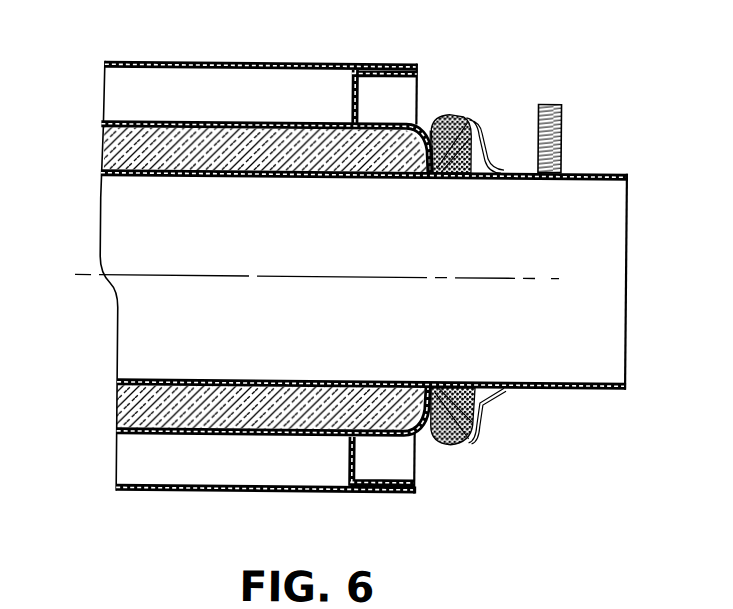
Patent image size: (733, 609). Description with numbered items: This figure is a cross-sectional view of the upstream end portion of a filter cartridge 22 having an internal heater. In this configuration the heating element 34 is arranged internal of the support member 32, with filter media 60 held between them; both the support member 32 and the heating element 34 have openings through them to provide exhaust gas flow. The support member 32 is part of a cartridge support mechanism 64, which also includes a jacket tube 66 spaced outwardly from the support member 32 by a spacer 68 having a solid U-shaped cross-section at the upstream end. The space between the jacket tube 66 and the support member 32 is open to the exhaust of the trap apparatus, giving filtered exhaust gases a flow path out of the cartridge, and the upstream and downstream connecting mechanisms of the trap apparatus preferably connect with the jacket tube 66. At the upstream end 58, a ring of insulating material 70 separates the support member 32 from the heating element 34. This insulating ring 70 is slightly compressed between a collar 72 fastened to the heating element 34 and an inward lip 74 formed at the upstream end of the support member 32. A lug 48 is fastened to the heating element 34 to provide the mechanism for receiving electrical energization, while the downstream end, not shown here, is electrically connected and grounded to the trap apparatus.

The filter cartridge 22 is at (552, 454).
The support member 32 is at (142, 124).
The heating element 34 is at (592, 183).
The lug 48 is at (563, 140).
The upstream end 58 is at (592, 318).
The filter media 60 is at (118, 155).
The cartridge support mechanism 64 is at (290, 255).
The jacket tube 66 is at (157, 64).
The spacer 68 is at (358, 100).
The ring of insulating material 70 is at (451, 442).
The collar 72 is at (479, 130).
The inward lip 74 is at (418, 150).